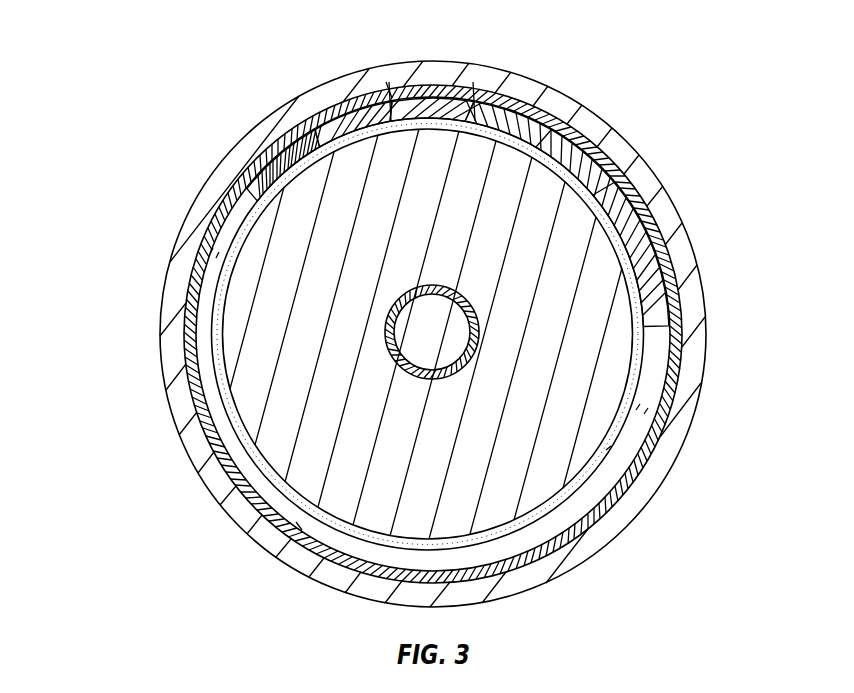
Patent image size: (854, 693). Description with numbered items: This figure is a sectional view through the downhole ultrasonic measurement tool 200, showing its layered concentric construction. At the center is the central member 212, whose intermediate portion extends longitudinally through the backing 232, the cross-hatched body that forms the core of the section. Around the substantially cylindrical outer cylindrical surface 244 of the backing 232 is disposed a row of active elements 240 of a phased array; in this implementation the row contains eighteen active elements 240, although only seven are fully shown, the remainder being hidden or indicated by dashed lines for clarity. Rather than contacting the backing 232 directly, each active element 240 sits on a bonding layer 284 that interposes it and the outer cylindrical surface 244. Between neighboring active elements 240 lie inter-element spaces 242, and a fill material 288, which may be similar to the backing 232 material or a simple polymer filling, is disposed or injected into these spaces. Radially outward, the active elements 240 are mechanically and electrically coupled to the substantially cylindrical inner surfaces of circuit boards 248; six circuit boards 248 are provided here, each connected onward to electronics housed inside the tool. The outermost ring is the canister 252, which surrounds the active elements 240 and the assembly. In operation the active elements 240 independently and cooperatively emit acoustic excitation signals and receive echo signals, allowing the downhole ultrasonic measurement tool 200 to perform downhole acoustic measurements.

The downhole ultrasonic measurement tool 200 is at (100, 173).
The central member 212 is at (406, 358).
The backing 232 is at (364, 252).
The active elements 240 is at (488, 100).
The inter-element spaces 242 is at (388, 84).
The outer cylindrical surface 244 is at (302, 512).
The circuit boards 248 is at (187, 292).
The canister 252 is at (232, 167).
The bonding layer 284 is at (216, 345).
The fill material 288 is at (236, 452).